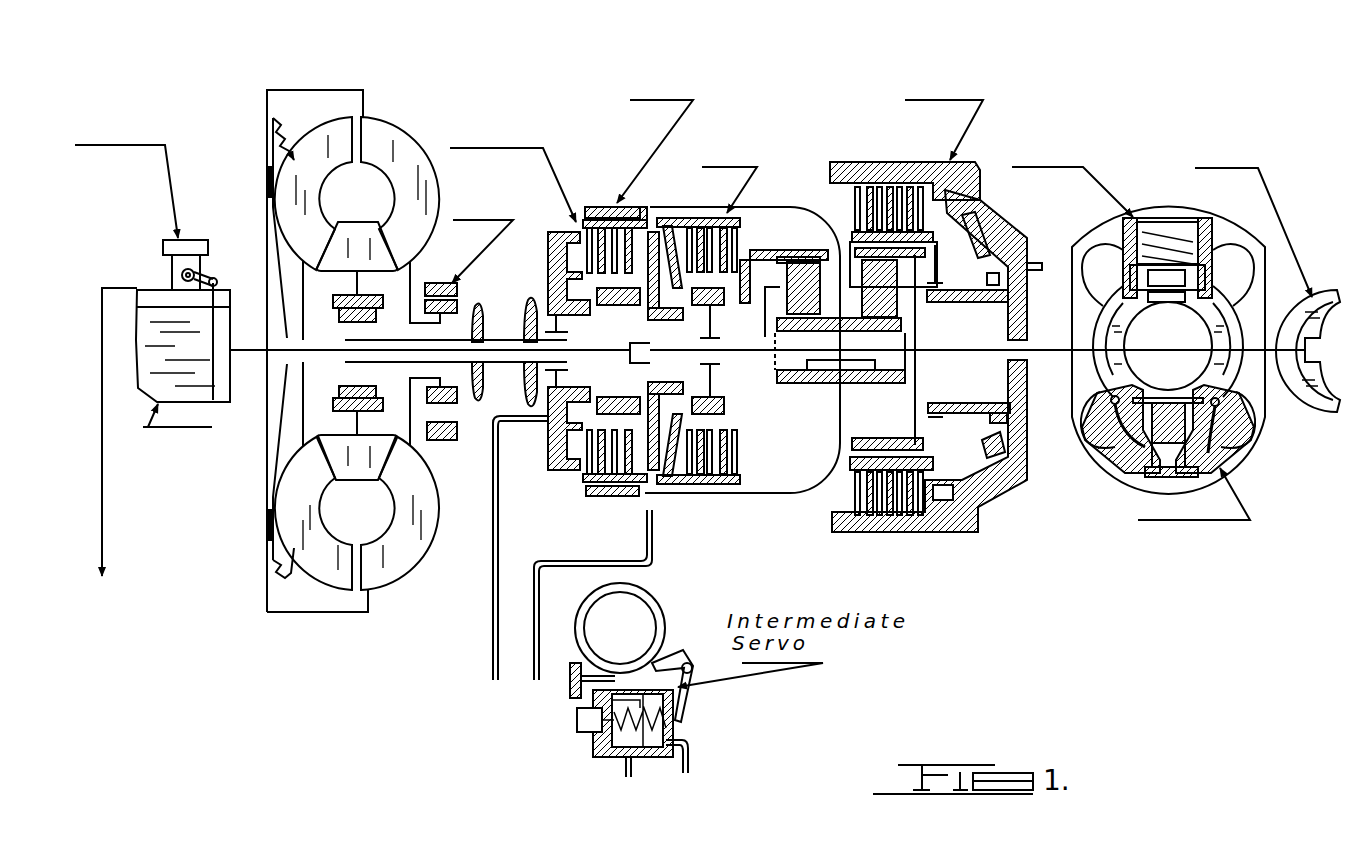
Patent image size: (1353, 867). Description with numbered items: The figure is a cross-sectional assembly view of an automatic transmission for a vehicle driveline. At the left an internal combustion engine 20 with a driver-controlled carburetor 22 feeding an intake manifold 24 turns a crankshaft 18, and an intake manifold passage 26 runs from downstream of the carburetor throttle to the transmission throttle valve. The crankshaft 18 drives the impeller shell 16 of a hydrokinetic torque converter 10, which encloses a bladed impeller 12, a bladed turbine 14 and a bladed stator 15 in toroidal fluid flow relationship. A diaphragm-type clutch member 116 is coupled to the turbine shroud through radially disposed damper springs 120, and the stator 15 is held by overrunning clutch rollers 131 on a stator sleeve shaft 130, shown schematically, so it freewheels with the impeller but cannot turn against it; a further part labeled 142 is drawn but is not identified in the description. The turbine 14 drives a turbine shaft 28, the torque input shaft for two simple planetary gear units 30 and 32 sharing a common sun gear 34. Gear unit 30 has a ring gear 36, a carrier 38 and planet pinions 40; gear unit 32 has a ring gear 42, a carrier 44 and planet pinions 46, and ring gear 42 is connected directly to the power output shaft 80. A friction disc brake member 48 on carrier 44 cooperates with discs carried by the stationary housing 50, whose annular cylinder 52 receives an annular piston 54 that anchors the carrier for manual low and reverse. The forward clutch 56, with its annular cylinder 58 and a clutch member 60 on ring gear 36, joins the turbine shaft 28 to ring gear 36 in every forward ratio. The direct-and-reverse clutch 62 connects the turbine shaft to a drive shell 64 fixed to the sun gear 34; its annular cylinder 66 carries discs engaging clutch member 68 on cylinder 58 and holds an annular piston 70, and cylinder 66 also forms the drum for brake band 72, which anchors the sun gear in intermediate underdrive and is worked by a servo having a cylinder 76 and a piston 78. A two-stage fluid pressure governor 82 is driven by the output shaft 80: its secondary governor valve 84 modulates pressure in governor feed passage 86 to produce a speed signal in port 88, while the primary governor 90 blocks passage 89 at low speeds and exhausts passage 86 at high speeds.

The hydrokinetic torque converter 10 is at (380, 121).
The bladed impeller 12 is at (407, 168).
The bladed turbine 14 is at (323, 130).
The bladed stator 15 is at (350, 236).
The impeller shell 16 is at (267, 100).
The crankshaft 18 is at (255, 360).
The internal combustion engine 20 is at (224, 404).
The carburetor 22 is at (170, 262).
The intake manifold 24 is at (163, 290).
The intake manifold passage 26 is at (104, 508).
The turbine shaft 28 is at (345, 340).
The planetary gear unit 30 is at (804, 249).
The planetary gear unit 32 is at (866, 246).
The sun gear 34 is at (824, 384).
The ring gear 36 is at (758, 248).
The carrier 38 is at (777, 292).
The planet pinions 40 is at (786, 276).
The ring gear 42 is at (918, 257).
The carrier 44 is at (903, 326).
The planet pinions 46 is at (897, 308).
The friction disc brake member 48 is at (940, 187).
The stationary housing 50 is at (858, 162).
The annular cylinder 52 is at (992, 215).
The annular piston 54 is at (1020, 240).
The forward clutch 56 is at (702, 226).
The annular cylinder 58 is at (668, 226).
The clutch member 60 is at (697, 307).
The direct-and-reverse clutch 62 is at (603, 227).
The drive shell 64 is at (756, 494).
The annular cylinder 66 is at (576, 234).
The clutch member 68 is at (620, 307).
The annular piston 70 is at (556, 286).
The brake band 72 is at (620, 206).
The cylinder 76 is at (667, 773).
The piston 78 is at (639, 768).
The power output shaft 80 is at (1043, 343).
The fluid pressure governor 82 is at (1218, 276).
The secondary governor valve 84 is at (1172, 465).
The governor feed passage 86 is at (1112, 444).
The port 88 is at (1212, 452).
The passage 89 is at (1215, 426).
The primary governor 90 is at (1165, 268).
The clutch member 116 is at (271, 228).
The damper springs 120 is at (284, 117).
The stator sleeve shaft 130 is at (459, 300).
The overrunning clutch rollers 131 is at (339, 392).
The pump driven gear 142 is at (442, 440).